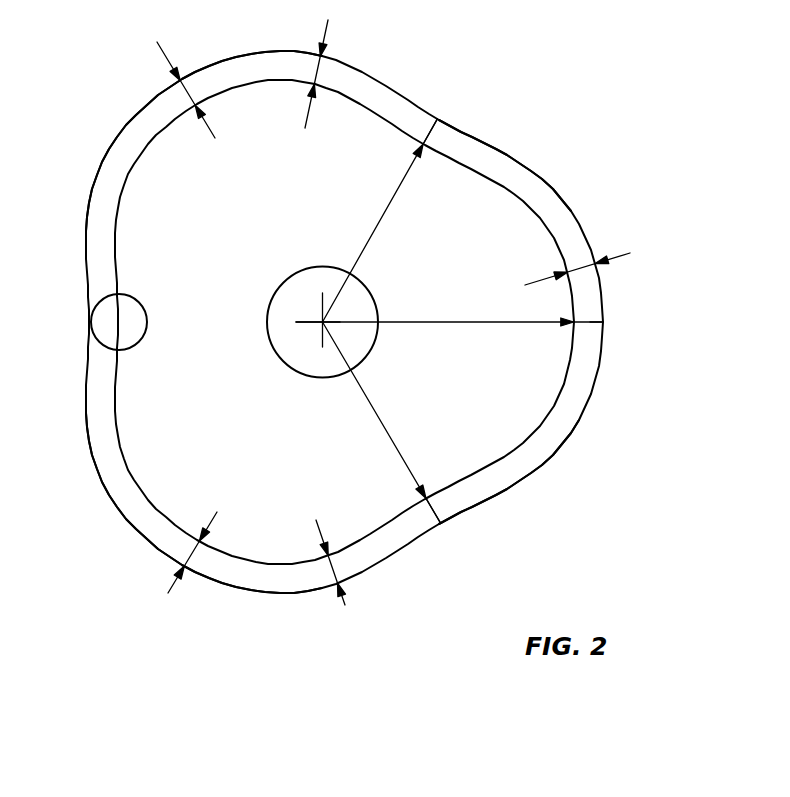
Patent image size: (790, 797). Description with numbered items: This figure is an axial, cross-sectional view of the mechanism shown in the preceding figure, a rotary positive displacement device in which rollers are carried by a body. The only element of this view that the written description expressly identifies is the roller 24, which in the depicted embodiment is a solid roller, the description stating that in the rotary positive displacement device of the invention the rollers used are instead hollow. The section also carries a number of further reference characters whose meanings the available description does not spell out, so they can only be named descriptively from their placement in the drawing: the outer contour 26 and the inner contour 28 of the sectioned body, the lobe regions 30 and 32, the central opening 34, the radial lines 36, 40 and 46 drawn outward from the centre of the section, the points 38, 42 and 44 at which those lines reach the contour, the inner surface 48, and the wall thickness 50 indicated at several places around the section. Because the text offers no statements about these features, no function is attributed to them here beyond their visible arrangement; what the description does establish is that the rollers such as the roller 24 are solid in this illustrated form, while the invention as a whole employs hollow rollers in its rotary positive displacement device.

The roller 24 is at (120, 294).
The cam body outer surface 26 is at (568, 210).
The cam lobe 28 is at (600, 363).
The cam lobe 30 is at (227, 585).
The cam lobe 32 is at (132, 118).
The central bore 34 is at (322, 321).
The radius line 36 is at (374, 409).
The valley point 38 is at (441, 523).
The radius line 40 is at (482, 322).
The lobe apex point 42 is at (603, 322).
The valley point 44 is at (438, 119).
The radius line 46 is at (396, 195).
The inner surface 48 is at (550, 398).
The wall thickness 50 is at (176, 96).